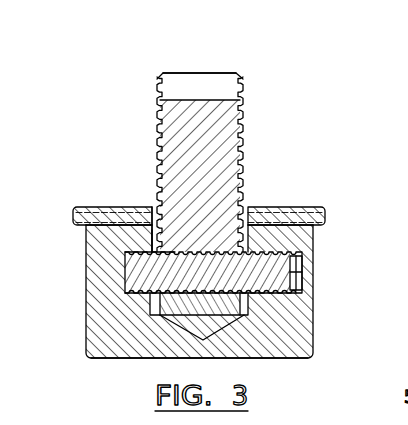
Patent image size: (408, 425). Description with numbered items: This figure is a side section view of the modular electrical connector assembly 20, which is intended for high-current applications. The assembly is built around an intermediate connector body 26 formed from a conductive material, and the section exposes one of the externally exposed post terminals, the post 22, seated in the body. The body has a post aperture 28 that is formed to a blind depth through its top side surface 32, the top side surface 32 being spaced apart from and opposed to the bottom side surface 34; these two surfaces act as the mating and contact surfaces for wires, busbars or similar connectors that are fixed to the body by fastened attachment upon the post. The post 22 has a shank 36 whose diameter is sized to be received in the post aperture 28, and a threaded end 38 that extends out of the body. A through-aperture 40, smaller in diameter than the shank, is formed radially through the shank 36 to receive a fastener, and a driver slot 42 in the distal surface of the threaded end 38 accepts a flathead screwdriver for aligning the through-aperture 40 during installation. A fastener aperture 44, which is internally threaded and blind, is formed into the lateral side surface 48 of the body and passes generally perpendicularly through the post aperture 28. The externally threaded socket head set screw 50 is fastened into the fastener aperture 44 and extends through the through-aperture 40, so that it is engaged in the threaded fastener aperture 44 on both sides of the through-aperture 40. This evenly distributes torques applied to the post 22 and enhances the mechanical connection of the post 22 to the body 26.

The electrical connector assembly 20 is at (273, 87).
The electrical terminal 22 is at (207, 171).
The connector body 26 is at (316, 241).
The post aperture 28 is at (155, 227).
The top side surface 32 is at (272, 250).
The bottom side surface 34 is at (140, 358).
The shank 36 is at (157, 238).
The threaded end 38 is at (157, 118).
The through-aperture 40 is at (177, 248).
The driver slot 42 is at (186, 85).
The fastener aperture 44 is at (276, 250).
The lateral side surface 48 is at (314, 320).
The set screw 50 is at (303, 278).